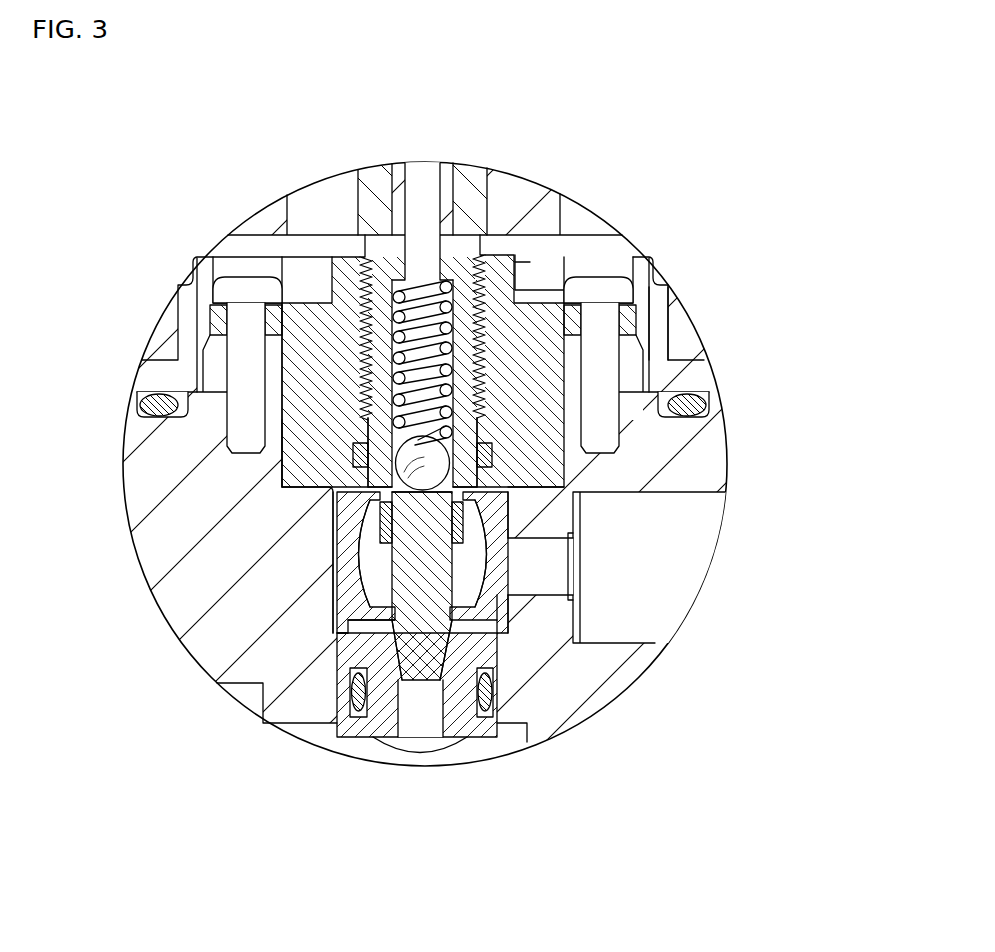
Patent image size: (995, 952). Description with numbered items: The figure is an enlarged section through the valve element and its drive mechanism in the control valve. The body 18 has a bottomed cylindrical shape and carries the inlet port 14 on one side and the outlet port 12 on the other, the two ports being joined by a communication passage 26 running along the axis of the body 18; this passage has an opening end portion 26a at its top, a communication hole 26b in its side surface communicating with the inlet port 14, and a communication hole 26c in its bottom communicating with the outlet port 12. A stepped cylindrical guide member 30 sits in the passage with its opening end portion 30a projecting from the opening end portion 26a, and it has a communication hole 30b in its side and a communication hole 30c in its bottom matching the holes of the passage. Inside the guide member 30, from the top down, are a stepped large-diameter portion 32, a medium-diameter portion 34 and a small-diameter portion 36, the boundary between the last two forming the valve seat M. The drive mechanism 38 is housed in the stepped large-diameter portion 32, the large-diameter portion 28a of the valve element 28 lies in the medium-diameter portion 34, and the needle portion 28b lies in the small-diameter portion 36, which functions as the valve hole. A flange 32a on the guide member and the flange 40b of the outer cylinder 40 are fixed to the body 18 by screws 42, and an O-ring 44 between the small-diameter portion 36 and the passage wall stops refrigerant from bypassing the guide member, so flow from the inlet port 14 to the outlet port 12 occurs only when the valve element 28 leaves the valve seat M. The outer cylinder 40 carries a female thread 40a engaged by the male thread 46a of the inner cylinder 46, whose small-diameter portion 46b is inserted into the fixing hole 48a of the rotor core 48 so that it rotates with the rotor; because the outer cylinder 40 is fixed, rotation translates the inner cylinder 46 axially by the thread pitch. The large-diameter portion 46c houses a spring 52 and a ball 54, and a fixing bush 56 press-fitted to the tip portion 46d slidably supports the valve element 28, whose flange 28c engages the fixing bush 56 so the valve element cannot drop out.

The outlet port 12 is at (240, 686).
The inlet port 14 is at (655, 490).
The body 18 is at (708, 470).
The communication passage 26 is at (333, 607).
The opening end portion 26a is at (350, 570).
The communication hole 26b is at (515, 545).
The communication hole 26c is at (360, 722).
The valve element 28 is at (432, 587).
The large-diameter portion 28a is at (520, 563).
The needle portion 28b is at (468, 655).
The flange 28c is at (458, 490).
The guide member 30 is at (497, 690).
The opening end portion 30a is at (340, 362).
The communication hole 30b is at (503, 536).
The communication hole 30c is at (415, 745).
The stepped large-diameter portion 32 is at (520, 381).
The flange 32a is at (630, 352).
The medium-diameter portion 34 is at (333, 633).
The small-diameter portion 36 is at (437, 715).
The drive mechanism 38 is at (530, 262).
The outer cylinder 40 is at (560, 258).
The female thread 40a is at (524, 276).
The flange 40b is at (556, 322).
The screws 42 is at (605, 290).
The O-ring 44 is at (493, 705).
The inner cylinder 46 is at (436, 225).
The male thread 46a is at (358, 260).
The small-diameter portion 46b is at (410, 222).
The large-diameter portion 46c is at (345, 400).
The tip portion 46d is at (365, 498).
The rotor core 48 is at (372, 182).
The fixing hole 48a is at (456, 178).
The spring 52 is at (395, 305).
The ball 54 is at (410, 456).
The fixing bush 56 is at (378, 520).
The valve seat M is at (578, 620).